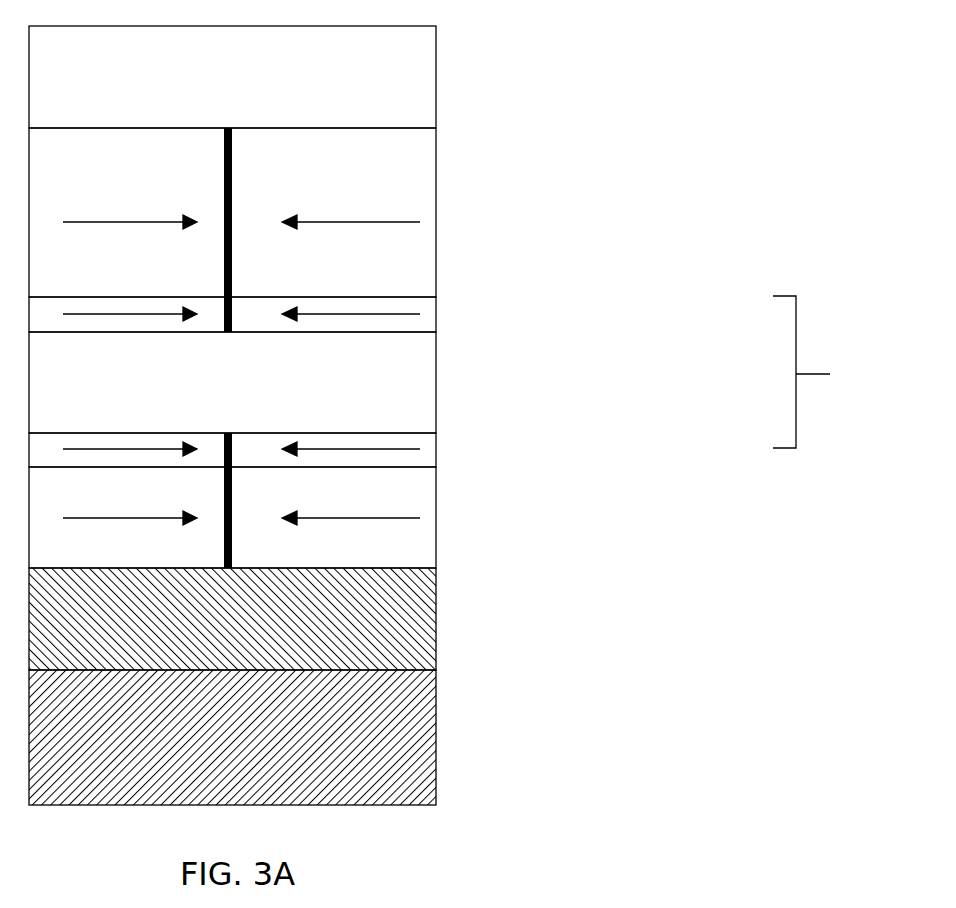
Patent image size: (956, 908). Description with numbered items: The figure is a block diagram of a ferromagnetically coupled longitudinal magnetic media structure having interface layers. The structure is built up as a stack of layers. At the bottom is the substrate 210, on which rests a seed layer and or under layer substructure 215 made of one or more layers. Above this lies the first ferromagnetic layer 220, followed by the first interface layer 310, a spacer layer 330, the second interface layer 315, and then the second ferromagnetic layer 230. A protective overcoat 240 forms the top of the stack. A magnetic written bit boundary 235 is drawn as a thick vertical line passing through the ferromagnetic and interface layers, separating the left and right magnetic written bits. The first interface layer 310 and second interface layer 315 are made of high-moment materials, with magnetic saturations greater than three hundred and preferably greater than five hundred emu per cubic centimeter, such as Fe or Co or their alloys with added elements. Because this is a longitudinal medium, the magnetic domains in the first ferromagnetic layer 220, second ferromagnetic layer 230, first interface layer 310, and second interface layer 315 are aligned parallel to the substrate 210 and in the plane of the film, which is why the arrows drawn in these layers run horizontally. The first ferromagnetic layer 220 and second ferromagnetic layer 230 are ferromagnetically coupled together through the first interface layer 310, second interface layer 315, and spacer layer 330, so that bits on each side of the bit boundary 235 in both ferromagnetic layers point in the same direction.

The protective overcoat 240 is at (427, 77).
The magnetic written bit boundary 235 is at (232, 167).
The second ferromagnetic layer 230 is at (428, 212).
The second interface layer 315 is at (394, 314).
The spacer layer 330 is at (380, 382).
The first interface layer 310 is at (394, 450).
The first ferromagnetic layer 220 is at (428, 517).
The seed layer and or under layer substructure 215 is at (414, 619).
The substrate 210 is at (358, 737).